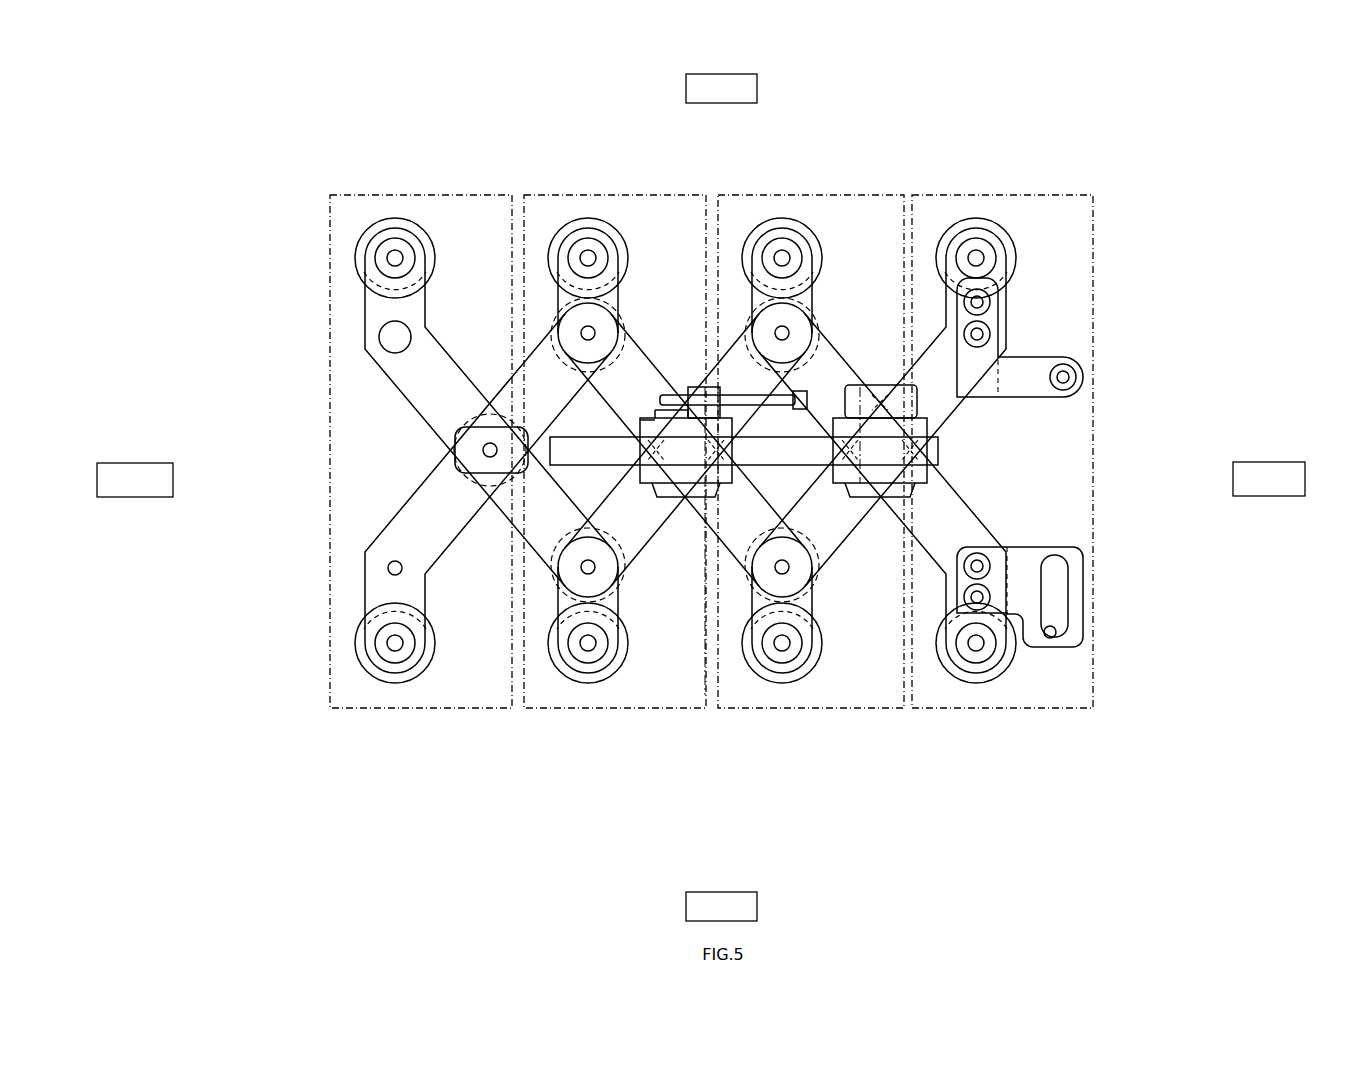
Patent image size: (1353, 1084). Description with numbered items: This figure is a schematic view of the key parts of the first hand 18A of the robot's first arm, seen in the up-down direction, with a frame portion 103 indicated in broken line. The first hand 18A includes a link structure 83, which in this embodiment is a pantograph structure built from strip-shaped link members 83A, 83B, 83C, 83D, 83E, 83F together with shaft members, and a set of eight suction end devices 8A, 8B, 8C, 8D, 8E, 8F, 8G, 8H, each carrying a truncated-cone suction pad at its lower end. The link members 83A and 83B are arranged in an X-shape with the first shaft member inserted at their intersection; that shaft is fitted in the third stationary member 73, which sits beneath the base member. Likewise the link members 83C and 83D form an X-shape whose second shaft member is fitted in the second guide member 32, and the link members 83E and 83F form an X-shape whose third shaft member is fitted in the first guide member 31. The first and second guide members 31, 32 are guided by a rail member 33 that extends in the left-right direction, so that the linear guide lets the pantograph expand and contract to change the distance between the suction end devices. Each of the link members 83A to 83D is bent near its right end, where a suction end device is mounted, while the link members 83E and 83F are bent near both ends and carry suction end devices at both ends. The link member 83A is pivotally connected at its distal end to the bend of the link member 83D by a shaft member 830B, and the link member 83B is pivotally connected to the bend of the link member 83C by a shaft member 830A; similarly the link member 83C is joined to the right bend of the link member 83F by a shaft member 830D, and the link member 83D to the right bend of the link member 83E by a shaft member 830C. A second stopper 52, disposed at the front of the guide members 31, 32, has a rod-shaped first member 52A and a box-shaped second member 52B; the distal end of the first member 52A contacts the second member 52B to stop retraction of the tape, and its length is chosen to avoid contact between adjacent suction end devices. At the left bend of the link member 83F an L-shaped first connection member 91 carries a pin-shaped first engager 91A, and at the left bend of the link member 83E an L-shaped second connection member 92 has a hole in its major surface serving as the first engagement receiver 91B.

The first hand 18A is at (735, 60).
The frame plate 103 is at (352, 195).
The suction end device 8A is at (397, 218).
The suction end device 8B is at (588, 218).
The suction end device 8C is at (782, 218).
The suction end device 8D is at (976, 218).
The suction end device 8E is at (403, 683).
The suction end device 8F is at (586, 683).
The suction end device 8G is at (808, 683).
The suction end device 8H is at (985, 683).
The link structure 83 is at (355, 332).
The link member 83A is at (448, 350).
The link member 83B is at (455, 540).
The link member 83C is at (648, 395).
The link member 83D is at (632, 560).
The link member 83E is at (836, 380).
The link member 83F is at (848, 530).
The shaft member 830A is at (585, 328).
The shaft member 830B is at (588, 572).
The shaft member 830C is at (785, 328).
The shaft member 830D is at (782, 572).
The third stationary member 73 is at (505, 478).
The second stopper 52 is at (752, 387).
The first member 52A is at (690, 387).
The second member 52B is at (881, 385).
The rail member 33 is at (938, 451).
The second guide member 32 is at (700, 497).
The first guide member 31 is at (875, 497).
The first connection member 91 is at (1032, 355).
The first engager 91A is at (1075, 379).
The first engagement receiver 91B is at (1047, 650).
The second connection member 92 is at (1085, 615).